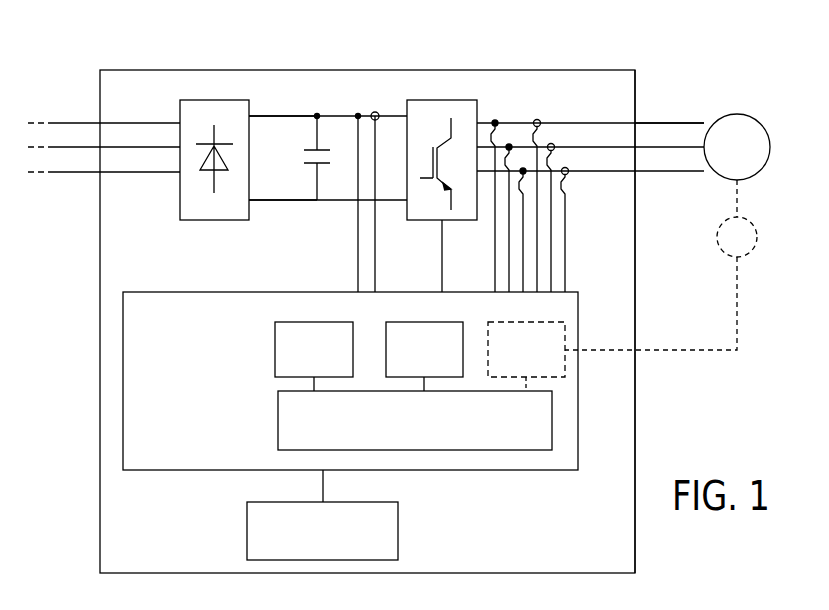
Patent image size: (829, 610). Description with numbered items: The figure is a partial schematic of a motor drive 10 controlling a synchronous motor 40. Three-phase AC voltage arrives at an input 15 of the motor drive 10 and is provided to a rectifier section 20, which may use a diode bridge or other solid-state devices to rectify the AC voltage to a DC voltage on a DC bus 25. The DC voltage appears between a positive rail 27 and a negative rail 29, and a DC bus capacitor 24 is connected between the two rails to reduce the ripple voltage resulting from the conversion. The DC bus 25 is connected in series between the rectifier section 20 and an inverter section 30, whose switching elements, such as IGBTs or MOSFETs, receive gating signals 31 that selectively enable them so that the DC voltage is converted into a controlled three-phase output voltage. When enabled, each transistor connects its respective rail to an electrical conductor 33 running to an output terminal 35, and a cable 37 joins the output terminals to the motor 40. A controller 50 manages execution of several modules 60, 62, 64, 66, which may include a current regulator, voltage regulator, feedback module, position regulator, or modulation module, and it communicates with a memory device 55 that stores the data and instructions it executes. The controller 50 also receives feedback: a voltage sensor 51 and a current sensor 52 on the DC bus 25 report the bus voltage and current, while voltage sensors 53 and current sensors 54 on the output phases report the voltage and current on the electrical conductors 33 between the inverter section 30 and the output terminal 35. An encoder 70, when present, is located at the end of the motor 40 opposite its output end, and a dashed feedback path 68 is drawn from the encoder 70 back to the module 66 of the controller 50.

The motor drive 10 is at (575, 70).
The input 15 is at (88, 117).
The rectifier section 20 is at (215, 100).
The DC bus capacitor 24 is at (300, 152).
The DC bus 25 is at (275, 98).
The positive rail 27 is at (287, 116).
The negative rail 29 is at (281, 200).
The inverter section 30 is at (443, 100).
The gating signals 31 is at (442, 256).
The electrical conductor 33 is at (487, 185).
The output terminal 35 is at (645, 118).
The cable 37 is at (688, 123).
The synchronous motor 40 is at (770, 147).
The controller 50 is at (167, 292).
The voltage sensor 51 is at (358, 113).
The current sensor 52 is at (376, 112).
The voltage sensors 53 is at (524, 167).
The current sensors 54 is at (566, 167).
The memory device 55 is at (398, 530).
The module 60 is at (428, 431).
The module 62 is at (327, 363).
The module 64 is at (437, 363).
The module 66 is at (539, 363).
The position feedback signal 68 is at (678, 351).
The encoder 70 is at (757, 237).